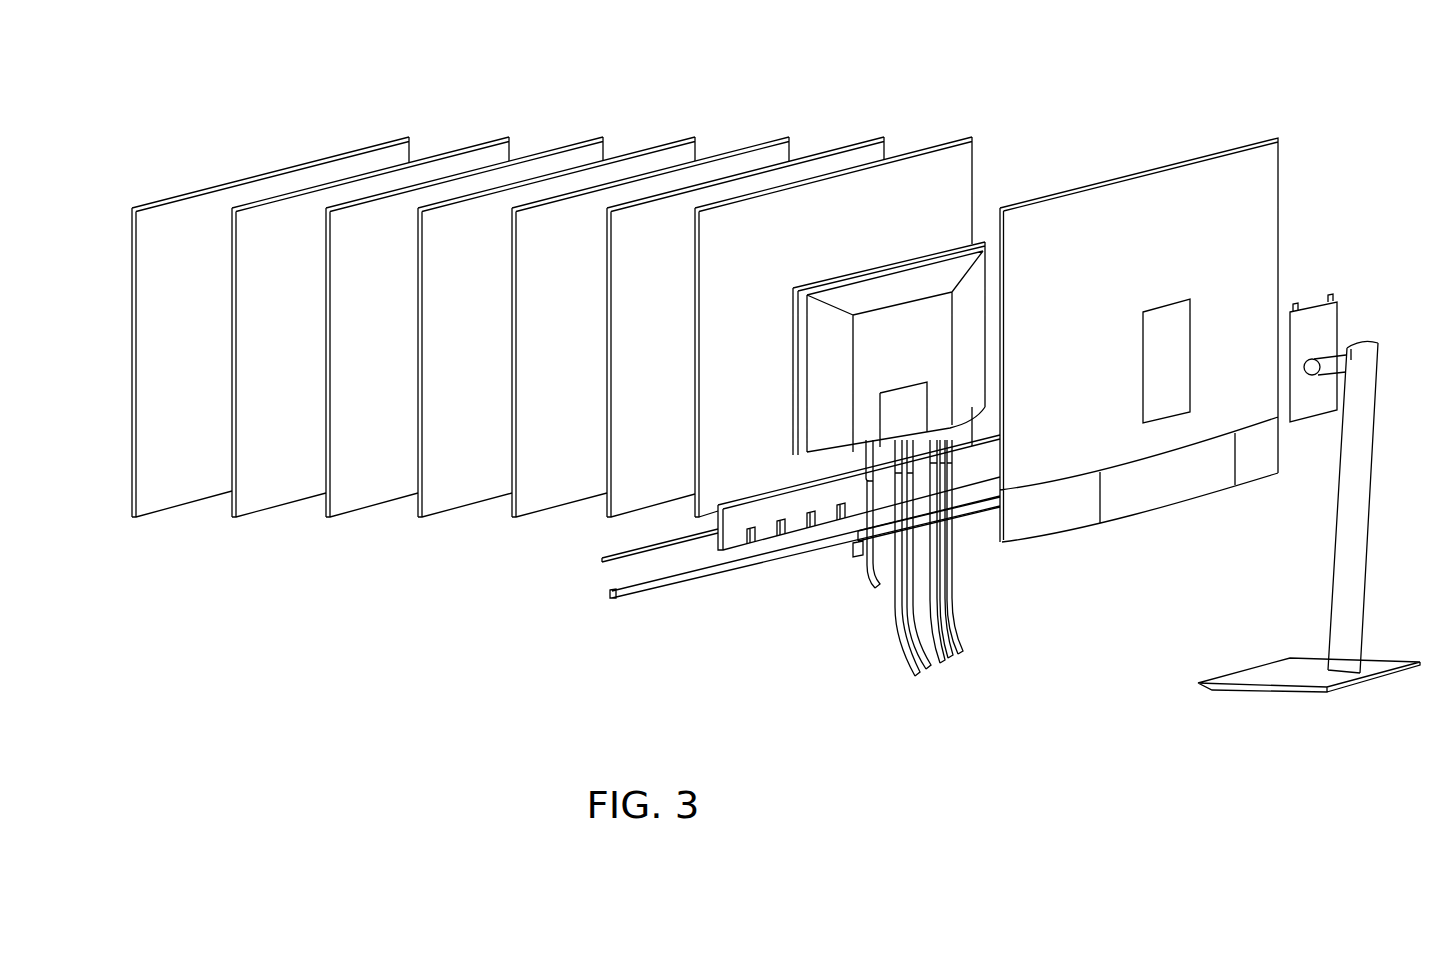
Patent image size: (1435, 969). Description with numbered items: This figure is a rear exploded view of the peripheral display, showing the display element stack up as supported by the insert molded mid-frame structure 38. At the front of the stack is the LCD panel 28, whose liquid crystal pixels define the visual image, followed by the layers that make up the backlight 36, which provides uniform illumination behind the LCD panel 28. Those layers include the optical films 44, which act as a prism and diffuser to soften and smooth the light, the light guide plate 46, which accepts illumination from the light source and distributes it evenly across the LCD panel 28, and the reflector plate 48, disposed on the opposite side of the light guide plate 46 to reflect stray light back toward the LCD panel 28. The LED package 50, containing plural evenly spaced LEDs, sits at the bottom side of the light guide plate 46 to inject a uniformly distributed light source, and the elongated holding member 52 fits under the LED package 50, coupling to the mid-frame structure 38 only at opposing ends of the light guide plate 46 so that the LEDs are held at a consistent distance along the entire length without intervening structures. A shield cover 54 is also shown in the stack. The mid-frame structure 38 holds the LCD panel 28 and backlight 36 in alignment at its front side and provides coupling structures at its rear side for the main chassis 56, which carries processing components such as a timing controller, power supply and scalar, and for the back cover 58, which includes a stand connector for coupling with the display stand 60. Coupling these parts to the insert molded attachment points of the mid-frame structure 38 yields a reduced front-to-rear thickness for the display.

The LCD panel 28 is at (152, 510).
The backlight 36 is at (423, 112).
The insert molded mid-frame structure 38 is at (935, 158).
The optical films 44 is at (254, 510).
The light guide plate (LGP) 46 is at (534, 510).
The reflector plate 48 is at (622, 518).
The LED package 50 is at (652, 550).
The elongated holding member 52 is at (713, 573).
The shield cover 54 is at (792, 520).
The main chassis 56 is at (988, 657).
The back cover 58 is at (1140, 185).
The display stand 60 is at (1345, 657).